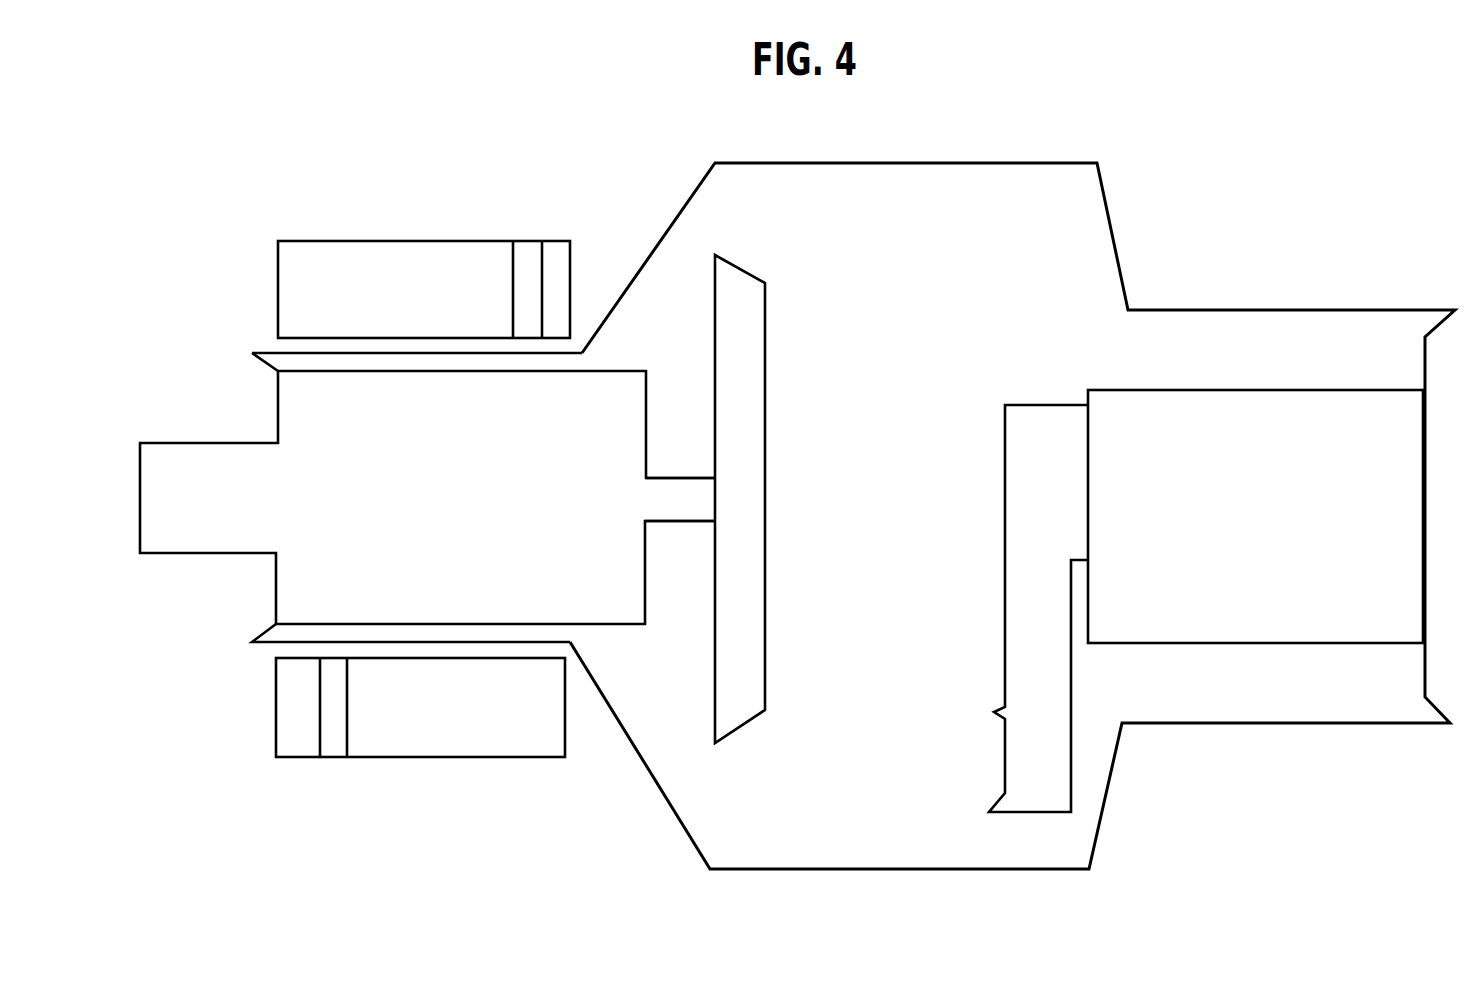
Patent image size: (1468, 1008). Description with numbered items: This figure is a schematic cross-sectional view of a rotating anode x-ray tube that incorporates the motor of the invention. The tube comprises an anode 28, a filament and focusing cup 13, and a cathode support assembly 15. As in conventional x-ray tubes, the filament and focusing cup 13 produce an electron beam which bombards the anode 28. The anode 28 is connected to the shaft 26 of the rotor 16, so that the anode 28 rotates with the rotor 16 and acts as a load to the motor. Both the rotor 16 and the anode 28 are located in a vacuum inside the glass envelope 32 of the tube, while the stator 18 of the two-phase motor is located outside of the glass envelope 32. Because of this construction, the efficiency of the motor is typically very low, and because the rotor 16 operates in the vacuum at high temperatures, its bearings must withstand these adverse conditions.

The filament and focusing cup 13 is at (1003, 756).
The cathode support assembly 15 is at (1332, 432).
The rotor 16 is at (300, 412).
The stator 18 is at (440, 270).
The shaft 26 is at (692, 492).
The anode 28 is at (748, 315).
The glass envelope 32 is at (1030, 161).